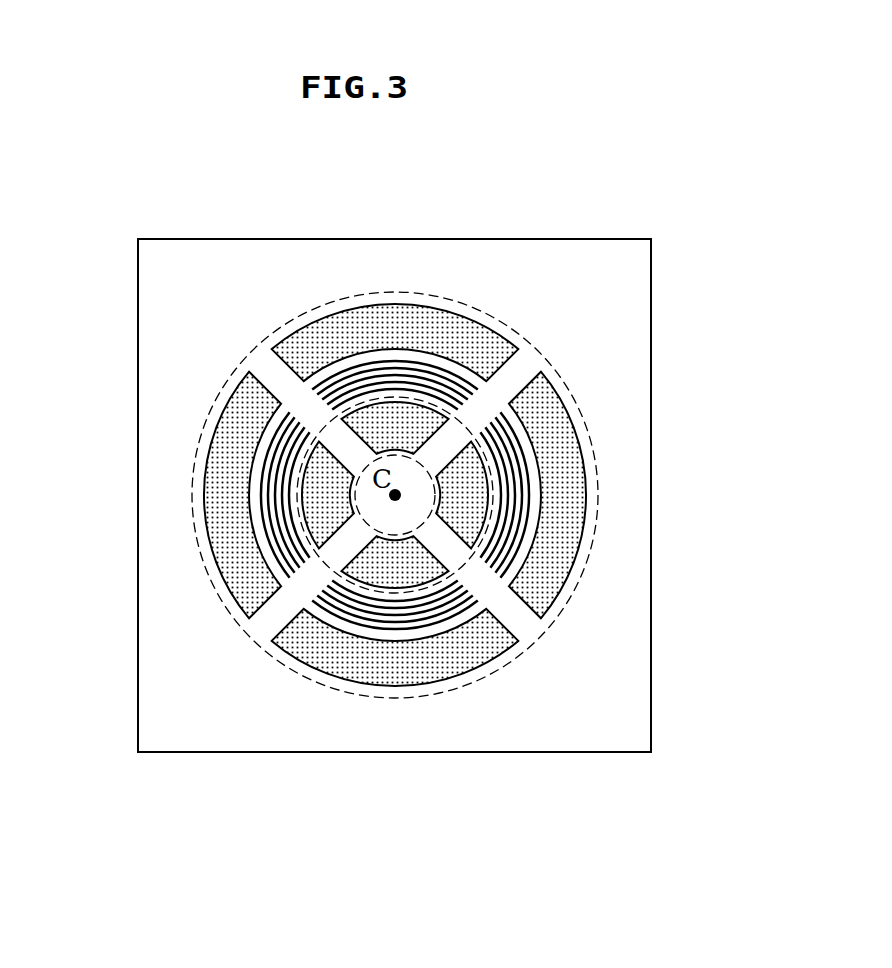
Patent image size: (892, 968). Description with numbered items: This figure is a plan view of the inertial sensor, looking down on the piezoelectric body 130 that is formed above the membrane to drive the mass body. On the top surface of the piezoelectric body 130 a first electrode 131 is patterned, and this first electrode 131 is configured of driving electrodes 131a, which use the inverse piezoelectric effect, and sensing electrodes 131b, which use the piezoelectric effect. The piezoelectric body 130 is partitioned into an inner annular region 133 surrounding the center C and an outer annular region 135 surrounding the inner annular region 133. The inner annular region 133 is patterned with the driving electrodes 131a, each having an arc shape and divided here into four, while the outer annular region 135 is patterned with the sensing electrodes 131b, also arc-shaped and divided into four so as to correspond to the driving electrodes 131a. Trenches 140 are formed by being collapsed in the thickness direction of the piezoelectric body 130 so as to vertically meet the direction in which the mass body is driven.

The piezoelectric body 130 is at (543, 260).
The first electrode 131 is at (395, 589).
The driving electrodes 131a is at (465, 523).
The sensing electrodes 131b is at (547, 585).
The inner annular region 133 is at (333, 433).
The outer annular region 135 is at (265, 363).
The trenches 140 is at (443, 398).